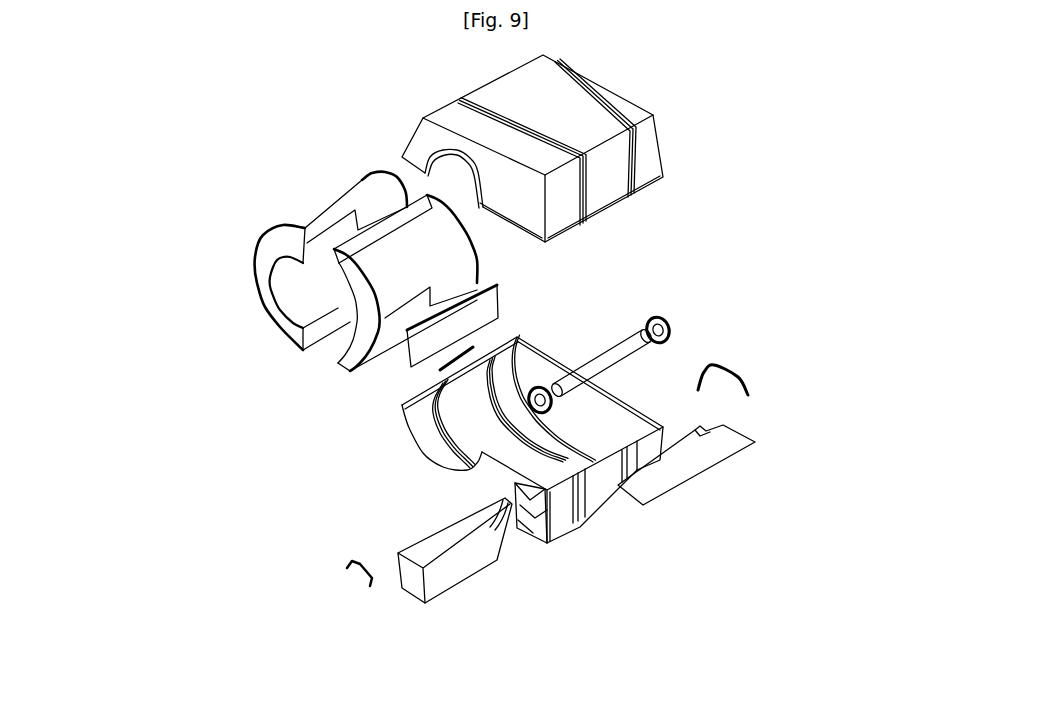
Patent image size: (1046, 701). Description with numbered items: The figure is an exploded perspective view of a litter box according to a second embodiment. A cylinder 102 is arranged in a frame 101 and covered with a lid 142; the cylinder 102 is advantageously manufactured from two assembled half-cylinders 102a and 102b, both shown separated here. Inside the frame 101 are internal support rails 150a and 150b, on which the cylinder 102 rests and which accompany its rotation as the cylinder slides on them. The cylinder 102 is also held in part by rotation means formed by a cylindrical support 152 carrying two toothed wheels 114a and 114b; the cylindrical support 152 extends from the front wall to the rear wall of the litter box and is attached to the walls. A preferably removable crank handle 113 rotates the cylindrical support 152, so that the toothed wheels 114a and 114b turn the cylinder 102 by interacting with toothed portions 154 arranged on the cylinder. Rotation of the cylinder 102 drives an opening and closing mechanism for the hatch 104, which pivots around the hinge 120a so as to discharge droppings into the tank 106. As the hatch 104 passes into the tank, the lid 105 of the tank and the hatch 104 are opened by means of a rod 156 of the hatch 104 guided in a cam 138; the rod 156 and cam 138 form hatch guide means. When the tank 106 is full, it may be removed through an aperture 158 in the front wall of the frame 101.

The frame 101 is at (522, 372).
The cylinder 102 is at (284, 282).
The half-cylinder 102a is at (318, 202).
The half-cylinder 102b is at (326, 310).
The hatch 104 is at (411, 348).
The lid of the tank 105 is at (667, 477).
The tank 106 is at (407, 598).
The crank handle 113 is at (357, 588).
The toothed wheel 114a is at (550, 410).
The toothed wheel 114b is at (673, 326).
The hinge 120a is at (438, 368).
The cam 138 is at (747, 395).
The lid 142 is at (417, 133).
The internal support rail 150a is at (465, 463).
The internal support rail 150b is at (500, 390).
The cylindrical support 152 is at (628, 337).
The toothed portion 154 is at (363, 293).
The rod 156 is at (510, 278).
The aperture 158 is at (540, 527).